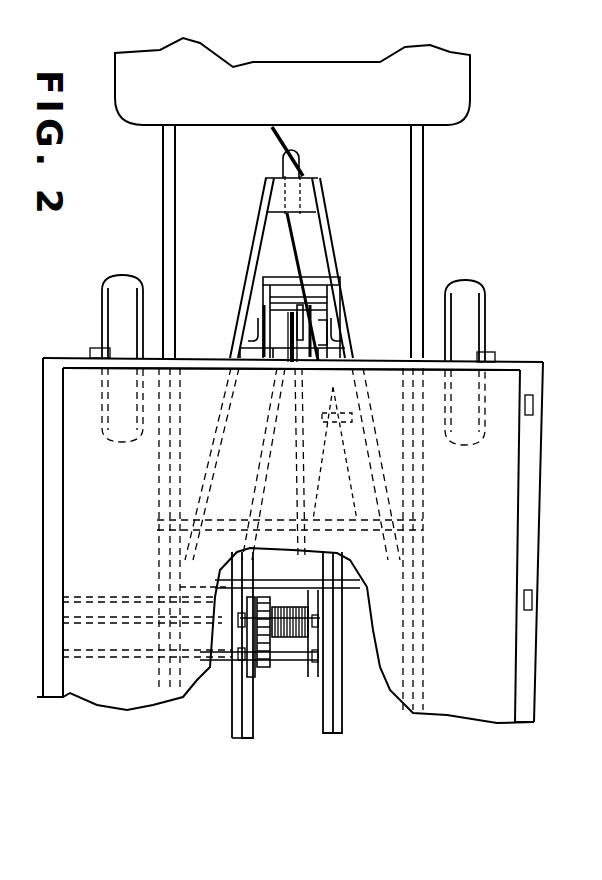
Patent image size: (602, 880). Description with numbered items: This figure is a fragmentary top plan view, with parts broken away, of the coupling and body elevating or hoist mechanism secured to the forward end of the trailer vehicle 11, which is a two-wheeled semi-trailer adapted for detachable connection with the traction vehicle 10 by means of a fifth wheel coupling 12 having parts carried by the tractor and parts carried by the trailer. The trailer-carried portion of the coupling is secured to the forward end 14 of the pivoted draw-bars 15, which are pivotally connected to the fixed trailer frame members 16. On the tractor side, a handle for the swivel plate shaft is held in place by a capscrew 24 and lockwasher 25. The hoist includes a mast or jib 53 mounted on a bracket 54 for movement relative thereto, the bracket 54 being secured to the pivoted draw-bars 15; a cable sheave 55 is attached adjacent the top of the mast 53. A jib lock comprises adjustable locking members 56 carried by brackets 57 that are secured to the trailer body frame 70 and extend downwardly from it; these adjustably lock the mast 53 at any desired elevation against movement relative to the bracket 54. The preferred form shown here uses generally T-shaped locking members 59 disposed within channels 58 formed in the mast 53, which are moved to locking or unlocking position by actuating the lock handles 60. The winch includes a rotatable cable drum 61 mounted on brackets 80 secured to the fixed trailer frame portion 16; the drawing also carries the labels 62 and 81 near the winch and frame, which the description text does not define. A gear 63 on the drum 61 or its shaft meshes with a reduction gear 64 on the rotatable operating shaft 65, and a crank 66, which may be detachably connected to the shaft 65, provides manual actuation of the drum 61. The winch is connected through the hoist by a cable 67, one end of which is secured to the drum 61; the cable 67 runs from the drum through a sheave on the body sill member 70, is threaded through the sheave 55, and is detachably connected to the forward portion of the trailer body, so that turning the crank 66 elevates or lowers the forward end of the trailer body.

The traction vehicle 10 is at (423, 160).
The trailer vehicle 11 is at (535, 667).
The fifth wheel coupling 12 is at (308, 160).
The forward end 14 is at (280, 172).
The pivoted draw-bars 15 is at (265, 220).
The fixed trailer frame members 16 is at (337, 717).
The capscrew 24 is at (268, 226).
The lockwasher 25 is at (240, 316).
The mast or jib 53 is at (297, 300).
The bracket 54 is at (262, 300).
The cable sheave 55 is at (352, 350).
The adjustable locking members 56 is at (347, 308).
The brackets 57 is at (340, 290).
The channels 58 is at (340, 270).
The T-shaped locking members 59 is at (268, 368).
The lock handles 60 is at (347, 330).
The rotatable cable drum 61 is at (277, 660).
The frame member 62 is at (190, 683).
The gear 63 is at (253, 640).
The reduction gear 64 is at (272, 670).
The rotatable operating shaft 65 is at (300, 652).
The crank 66 is at (290, 622).
The cable 67 is at (300, 557).
The trailer body frame 70 is at (197, 366).
The brackets 80 is at (240, 700).
The foot 81 is at (242, 737).